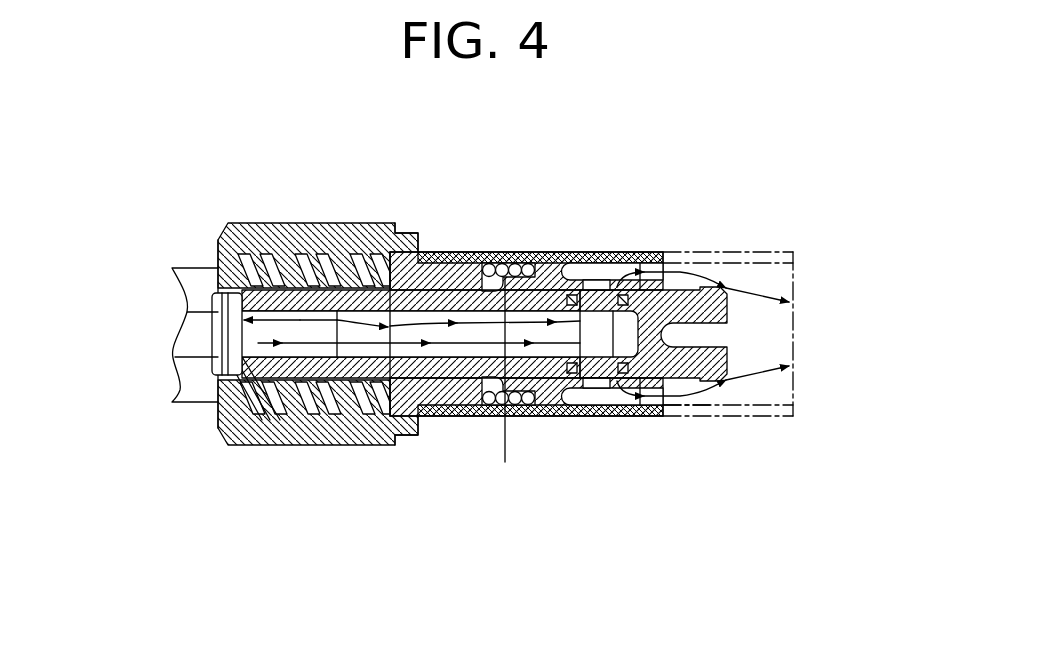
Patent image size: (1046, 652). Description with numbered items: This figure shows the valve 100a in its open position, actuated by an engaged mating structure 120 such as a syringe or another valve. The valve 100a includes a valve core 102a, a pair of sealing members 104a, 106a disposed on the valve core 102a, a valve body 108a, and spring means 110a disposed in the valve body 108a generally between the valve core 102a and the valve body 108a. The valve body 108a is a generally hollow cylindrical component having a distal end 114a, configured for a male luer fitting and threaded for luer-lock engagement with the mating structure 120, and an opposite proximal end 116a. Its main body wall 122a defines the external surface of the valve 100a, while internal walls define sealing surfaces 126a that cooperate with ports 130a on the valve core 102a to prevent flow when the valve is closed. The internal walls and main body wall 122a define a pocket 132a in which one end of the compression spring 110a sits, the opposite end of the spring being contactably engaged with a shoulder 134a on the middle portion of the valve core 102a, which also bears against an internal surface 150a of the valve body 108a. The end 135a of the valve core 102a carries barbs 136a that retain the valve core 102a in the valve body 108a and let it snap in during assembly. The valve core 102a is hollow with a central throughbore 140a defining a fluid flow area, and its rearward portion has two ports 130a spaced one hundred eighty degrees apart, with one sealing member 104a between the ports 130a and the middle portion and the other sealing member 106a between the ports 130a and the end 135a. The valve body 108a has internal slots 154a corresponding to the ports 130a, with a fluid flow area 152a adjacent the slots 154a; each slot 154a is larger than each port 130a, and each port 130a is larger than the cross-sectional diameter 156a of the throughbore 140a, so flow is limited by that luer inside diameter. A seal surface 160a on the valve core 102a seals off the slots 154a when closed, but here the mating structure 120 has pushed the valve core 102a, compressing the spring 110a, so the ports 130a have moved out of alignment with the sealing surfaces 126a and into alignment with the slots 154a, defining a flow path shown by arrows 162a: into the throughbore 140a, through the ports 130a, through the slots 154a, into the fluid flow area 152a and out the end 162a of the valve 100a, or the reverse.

The valve 100a is at (475, 350).
The valve core 102a is at (297, 334).
The sealing member 104a is at (593, 314).
The sealing member 106a is at (624, 374).
The valve body 108a is at (395, 221).
The spring means 110a is at (505, 419).
The distal end 114a is at (222, 438).
The proximal end 116a is at (788, 386).
The mating structure 120 is at (190, 287).
The main body wall 122a is at (393, 437).
The sealing surfaces 126a is at (487, 303).
The ports 130a is at (619, 251).
The pocket 132a is at (543, 419).
The shoulder 134a is at (518, 264).
The end 135a is at (581, 352).
The barbs 136a is at (728, 289).
The central throughbore 140a is at (284, 382).
The internal surface 150a is at (392, 302).
The fluid flow area 152a is at (708, 402).
The internal slots 154a is at (576, 294).
The cross-sectional diameter 156a is at (233, 316).
The seal surface 160a is at (690, 274).
The arrows 162a is at (795, 258).